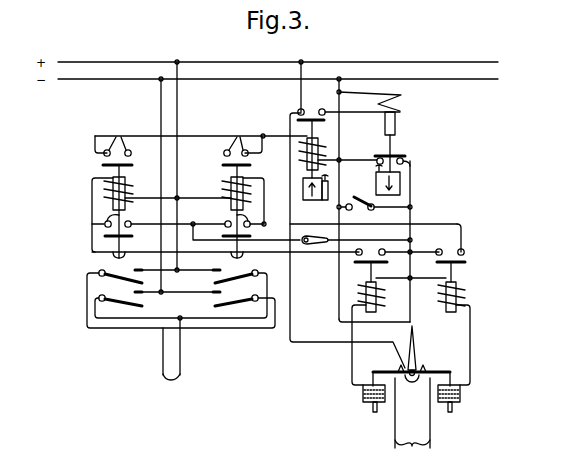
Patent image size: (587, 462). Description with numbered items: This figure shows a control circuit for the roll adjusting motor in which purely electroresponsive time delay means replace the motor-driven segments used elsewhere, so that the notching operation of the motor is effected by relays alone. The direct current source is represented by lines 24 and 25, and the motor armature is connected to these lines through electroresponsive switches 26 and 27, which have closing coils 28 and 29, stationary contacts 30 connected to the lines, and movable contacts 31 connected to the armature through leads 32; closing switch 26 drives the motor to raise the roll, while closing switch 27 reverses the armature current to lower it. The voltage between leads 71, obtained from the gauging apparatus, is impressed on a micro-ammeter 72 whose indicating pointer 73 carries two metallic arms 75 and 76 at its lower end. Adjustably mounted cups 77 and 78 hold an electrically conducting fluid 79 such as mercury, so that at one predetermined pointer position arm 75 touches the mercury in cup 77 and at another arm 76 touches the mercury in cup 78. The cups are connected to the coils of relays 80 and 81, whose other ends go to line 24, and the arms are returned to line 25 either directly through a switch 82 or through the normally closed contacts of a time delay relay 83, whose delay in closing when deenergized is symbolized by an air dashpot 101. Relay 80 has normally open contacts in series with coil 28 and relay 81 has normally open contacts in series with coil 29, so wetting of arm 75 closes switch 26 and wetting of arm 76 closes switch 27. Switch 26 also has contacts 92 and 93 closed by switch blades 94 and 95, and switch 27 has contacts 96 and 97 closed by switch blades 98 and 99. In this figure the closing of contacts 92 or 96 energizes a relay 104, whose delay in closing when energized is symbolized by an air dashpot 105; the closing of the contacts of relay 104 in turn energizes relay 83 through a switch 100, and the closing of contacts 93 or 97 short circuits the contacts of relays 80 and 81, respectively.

The line 24 is at (88, 62).
The line 25 is at (88, 81).
The electroresponsive switch 26 is at (82, 209).
The electroresponsive switch 27 is at (284, 191).
The closing coil 28 is at (132, 190).
The closing coil 29 is at (223, 188).
The stationary contacts 30 is at (143, 272).
The movable contacts 31 is at (108, 289).
The leads 32 is at (171, 356).
The leads 71 is at (412, 420).
The micro-ammeter 72 is at (446, 358).
The indicating pointer 73 is at (414, 347).
The metallic arm 75 is at (391, 367).
The metallic arm 76 is at (443, 371).
The cup 77 is at (373, 407).
The cup 78 is at (455, 405).
The electrically conducting fluid 79 is at (363, 398).
The relay 80 is at (366, 278).
The relay 81 is at (487, 278).
The switch 82 is at (372, 212).
The relay 83 is at (419, 143).
The normally open contacts 92 is at (118, 137).
The normally open contacts 93 is at (130, 218).
The switch blade 94 is at (103, 165).
The switch blade 95 is at (133, 237).
The normally open contacts 96 is at (239, 137).
The normally open contacts 97 is at (228, 219).
The switch blade 98 is at (251, 165).
The switch blade 99 is at (251, 237).
The switch 100 is at (315, 245).
The air dashpot 101 is at (376, 182).
The relay 104 is at (336, 136).
The air dashpot 105 is at (312, 200).